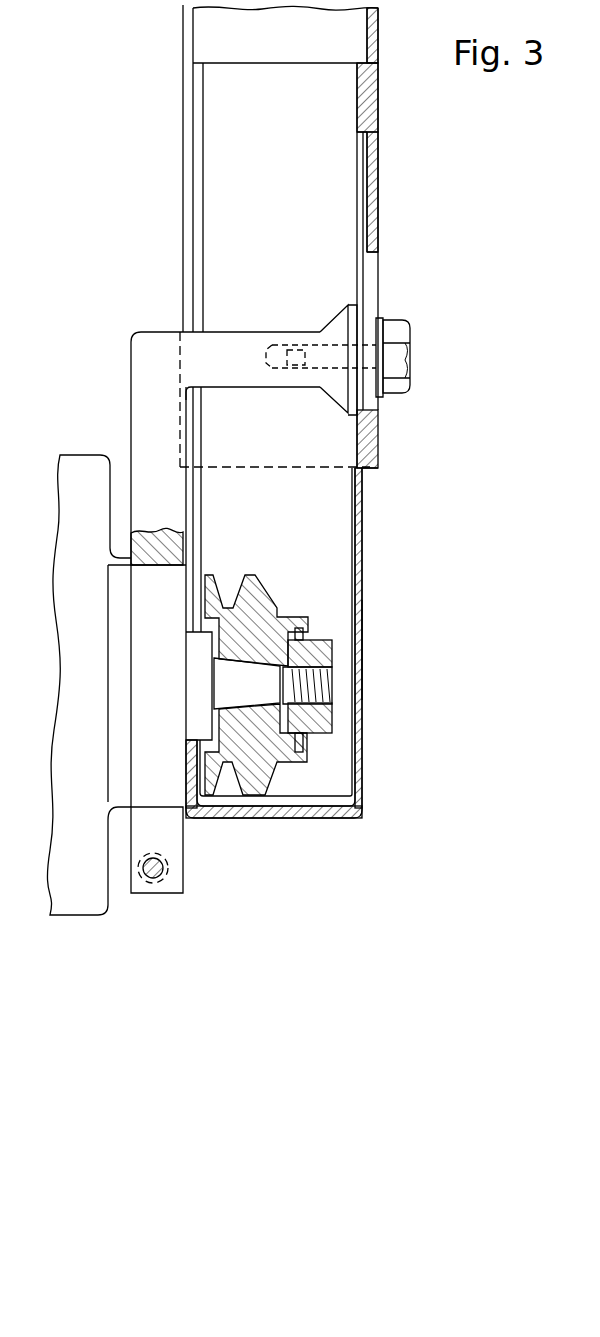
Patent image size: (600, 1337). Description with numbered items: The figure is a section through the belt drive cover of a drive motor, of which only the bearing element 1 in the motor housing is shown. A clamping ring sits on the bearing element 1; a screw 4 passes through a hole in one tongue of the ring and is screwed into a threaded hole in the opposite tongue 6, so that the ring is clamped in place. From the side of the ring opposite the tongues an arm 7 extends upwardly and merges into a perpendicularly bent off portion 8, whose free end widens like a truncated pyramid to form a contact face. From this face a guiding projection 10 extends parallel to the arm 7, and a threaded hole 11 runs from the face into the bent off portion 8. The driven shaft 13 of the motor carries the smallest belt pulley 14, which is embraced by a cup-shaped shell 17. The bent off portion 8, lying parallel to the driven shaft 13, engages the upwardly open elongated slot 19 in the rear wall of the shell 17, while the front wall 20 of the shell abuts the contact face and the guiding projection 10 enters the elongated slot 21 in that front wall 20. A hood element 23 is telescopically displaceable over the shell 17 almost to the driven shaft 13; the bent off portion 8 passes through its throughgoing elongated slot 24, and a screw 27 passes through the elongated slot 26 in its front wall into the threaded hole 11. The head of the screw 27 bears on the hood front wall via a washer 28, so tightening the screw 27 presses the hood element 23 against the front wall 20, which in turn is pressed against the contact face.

The bearing element 1 is at (120, 690).
The screw 4 is at (148, 879).
The tongue 6 is at (170, 882).
The arm 7 is at (143, 373).
The bent off portion 8 is at (242, 350).
The guiding projection 10 is at (358, 318).
The threaded hole 11 is at (297, 366).
The driven shaft 13 is at (250, 683).
The smallest belt pulley 14 is at (282, 750).
The cup-shaped shell 17 is at (363, 548).
The elongated slot 19 is at (198, 113).
The front wall 20 is at (363, 633).
The elongated slot 21 is at (363, 160).
The hood element 23 is at (378, 63).
The elongated slot 24 is at (186, 233).
The elongated slot 26 is at (370, 263).
The screw 27 is at (399, 361).
The washer 28 is at (383, 393).